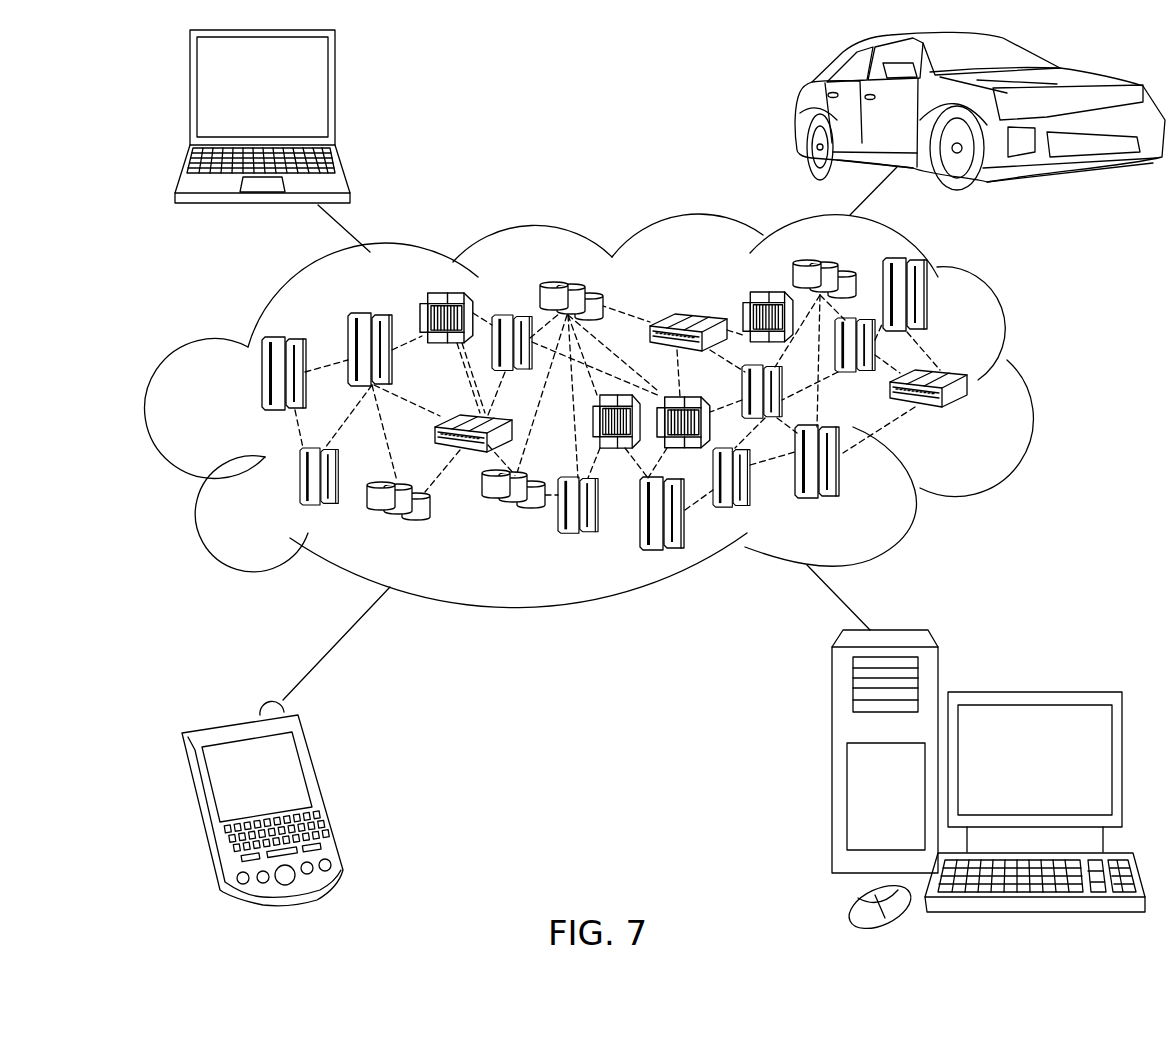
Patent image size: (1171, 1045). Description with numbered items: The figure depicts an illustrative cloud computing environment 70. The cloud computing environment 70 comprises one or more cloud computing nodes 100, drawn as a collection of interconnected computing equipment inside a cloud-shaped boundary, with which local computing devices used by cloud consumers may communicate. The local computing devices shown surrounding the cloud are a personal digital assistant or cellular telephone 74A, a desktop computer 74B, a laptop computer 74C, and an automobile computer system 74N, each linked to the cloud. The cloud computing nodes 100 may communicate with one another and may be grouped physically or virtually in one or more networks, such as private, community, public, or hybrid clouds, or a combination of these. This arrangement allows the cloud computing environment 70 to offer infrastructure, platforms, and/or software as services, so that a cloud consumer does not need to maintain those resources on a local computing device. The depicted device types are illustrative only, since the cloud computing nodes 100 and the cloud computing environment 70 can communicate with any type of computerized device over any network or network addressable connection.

The cloud computing environment 70 is at (1033, 383).
The cloud computing nodes 100 is at (970, 417).
The personal digital assistant or cellular telephone 74A is at (323, 790).
The desktop computer 74B is at (1030, 692).
The laptop computer 74C is at (335, 95).
The automobile computer system 74N is at (798, 112).